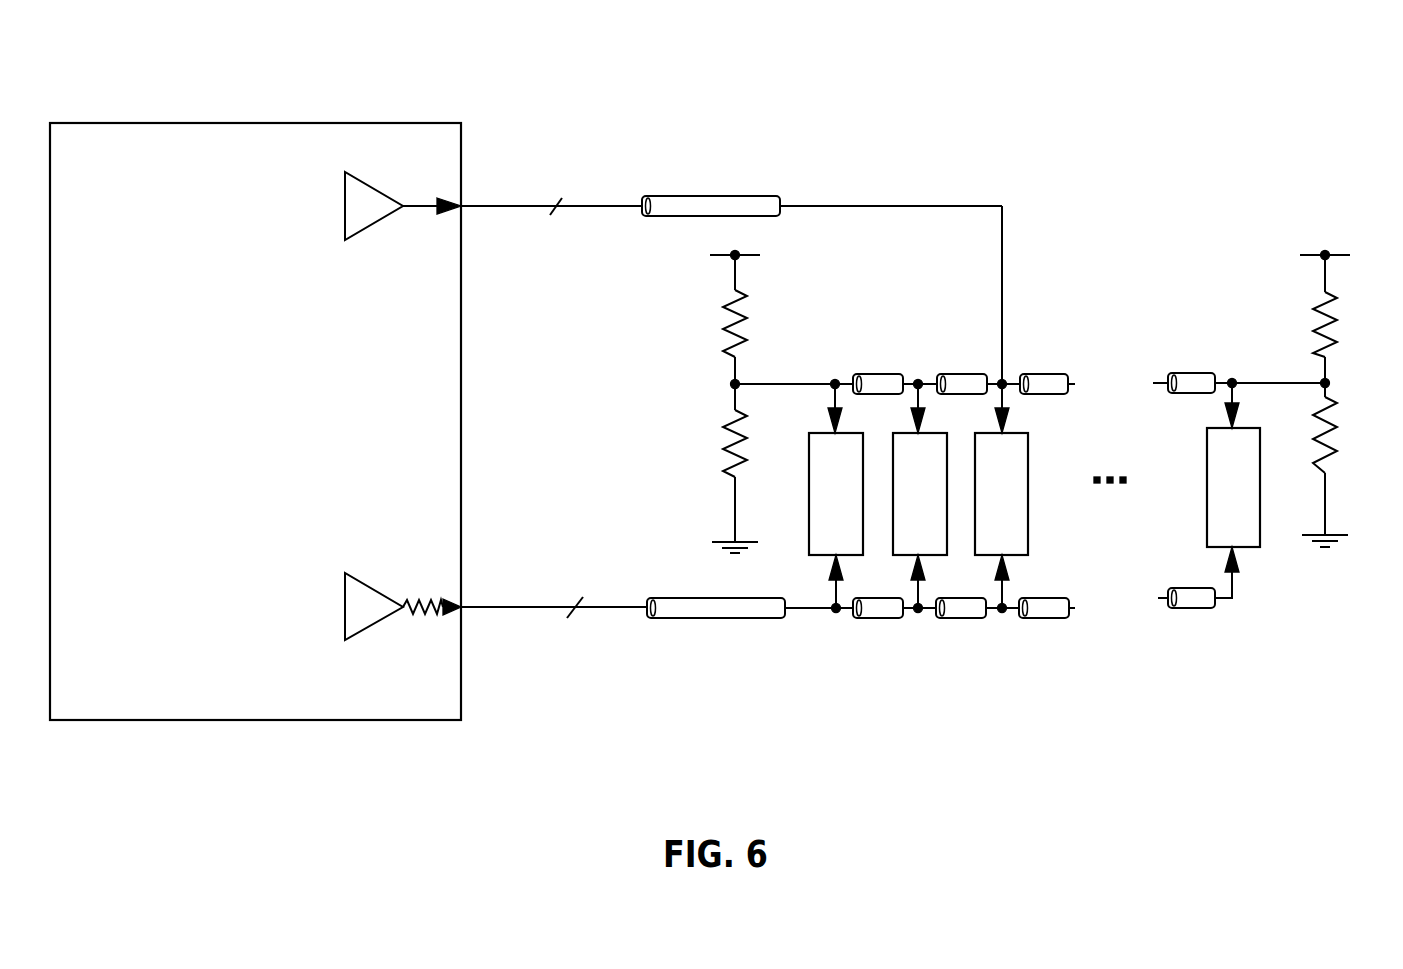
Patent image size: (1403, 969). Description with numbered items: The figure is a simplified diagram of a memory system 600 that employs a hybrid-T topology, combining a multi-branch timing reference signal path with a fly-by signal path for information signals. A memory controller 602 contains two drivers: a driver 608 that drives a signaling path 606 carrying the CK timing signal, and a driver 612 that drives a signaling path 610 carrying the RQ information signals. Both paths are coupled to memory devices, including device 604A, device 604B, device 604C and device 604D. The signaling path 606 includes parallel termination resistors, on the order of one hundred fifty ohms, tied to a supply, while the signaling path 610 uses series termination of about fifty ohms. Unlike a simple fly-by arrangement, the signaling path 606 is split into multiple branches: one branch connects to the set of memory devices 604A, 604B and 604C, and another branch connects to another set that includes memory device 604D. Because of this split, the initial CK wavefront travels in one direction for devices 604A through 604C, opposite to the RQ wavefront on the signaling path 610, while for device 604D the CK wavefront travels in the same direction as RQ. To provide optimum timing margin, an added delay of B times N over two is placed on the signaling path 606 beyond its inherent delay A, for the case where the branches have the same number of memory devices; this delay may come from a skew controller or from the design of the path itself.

The memory system 600 is at (718, 47).
The memory controller 602 is at (255, 421).
The memory device 604A is at (817, 555).
The memory device 604B is at (902, 555).
The memory device 604C is at (1028, 495).
The memory device 604D is at (1258, 547).
The signaling path 606 is at (500, 207).
The driver 608 is at (342, 213).
The signaling path 610 is at (618, 607).
The driver 612 is at (358, 573).